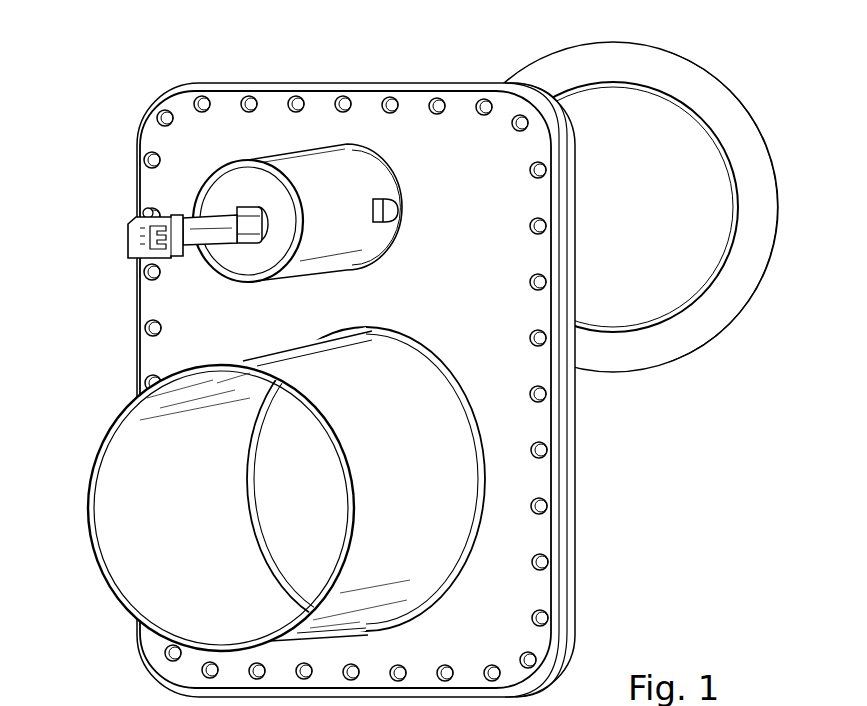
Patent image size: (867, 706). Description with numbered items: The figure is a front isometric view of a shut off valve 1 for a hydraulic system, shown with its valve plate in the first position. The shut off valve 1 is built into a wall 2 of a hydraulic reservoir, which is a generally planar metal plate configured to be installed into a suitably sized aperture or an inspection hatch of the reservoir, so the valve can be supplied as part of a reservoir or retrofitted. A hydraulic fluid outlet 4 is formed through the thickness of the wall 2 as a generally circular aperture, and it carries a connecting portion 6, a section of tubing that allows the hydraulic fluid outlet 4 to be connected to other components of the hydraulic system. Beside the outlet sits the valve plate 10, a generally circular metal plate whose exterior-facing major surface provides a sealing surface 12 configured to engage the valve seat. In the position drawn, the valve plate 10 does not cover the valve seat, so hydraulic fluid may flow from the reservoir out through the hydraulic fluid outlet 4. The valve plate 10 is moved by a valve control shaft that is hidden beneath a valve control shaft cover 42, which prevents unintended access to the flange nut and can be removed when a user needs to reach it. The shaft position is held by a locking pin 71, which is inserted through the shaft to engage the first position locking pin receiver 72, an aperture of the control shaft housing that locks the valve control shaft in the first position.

The shut off valve 1 is at (145, 96).
The wall 2 is at (572, 523).
The hydraulic fluid outlet 4 is at (477, 522).
The connecting portion 6 is at (117, 464).
The valve plate 10 is at (732, 334).
The sealing surface 12 is at (578, 80).
The valve control shaft cover 42 is at (277, 158).
The locking pin 71 is at (400, 216).
The first position locking pin receiver 72 is at (374, 200).